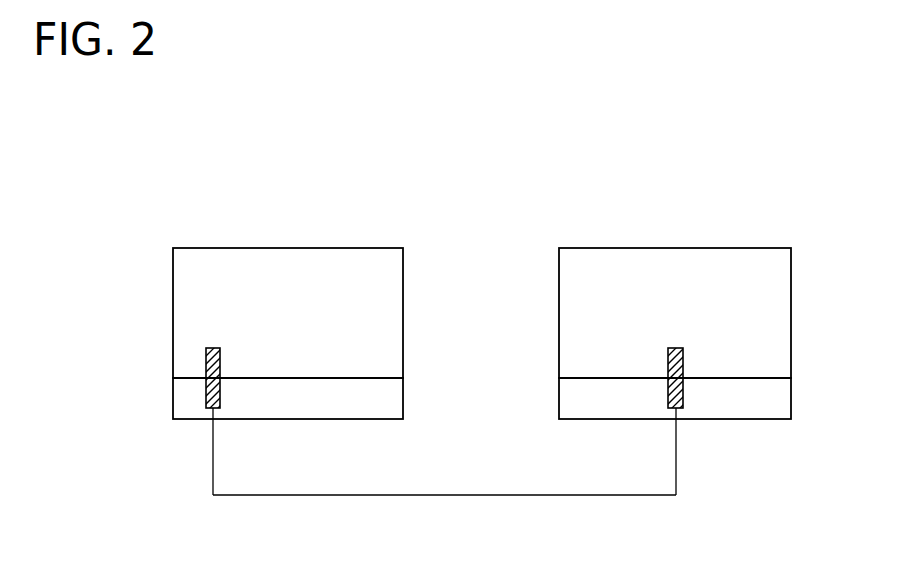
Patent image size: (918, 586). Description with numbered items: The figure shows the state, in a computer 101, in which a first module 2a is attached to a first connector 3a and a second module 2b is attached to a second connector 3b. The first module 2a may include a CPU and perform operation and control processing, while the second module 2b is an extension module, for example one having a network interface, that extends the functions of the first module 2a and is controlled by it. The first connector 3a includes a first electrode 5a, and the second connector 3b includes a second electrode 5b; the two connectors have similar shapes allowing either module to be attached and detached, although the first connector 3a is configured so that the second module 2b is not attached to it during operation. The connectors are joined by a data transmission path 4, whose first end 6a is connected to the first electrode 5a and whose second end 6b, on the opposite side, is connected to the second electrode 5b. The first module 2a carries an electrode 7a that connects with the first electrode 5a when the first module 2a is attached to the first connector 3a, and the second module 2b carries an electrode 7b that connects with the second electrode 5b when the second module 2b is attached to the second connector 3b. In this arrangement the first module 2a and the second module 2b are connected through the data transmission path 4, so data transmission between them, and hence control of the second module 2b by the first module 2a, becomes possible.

The computer 101 is at (503, 178).
The second module 2b is at (287, 272).
The first module 2a is at (674, 272).
The second connector 3b is at (190, 410).
The first connector 3a is at (770, 399).
The second electrode 5b is at (211, 392).
The first electrode 5a is at (670, 396).
The electrode 7b is at (211, 352).
The electrode 7a is at (680, 360).
The second end 6b is at (216, 410).
The first end 6a is at (678, 410).
The data transmission path 4 is at (480, 497).